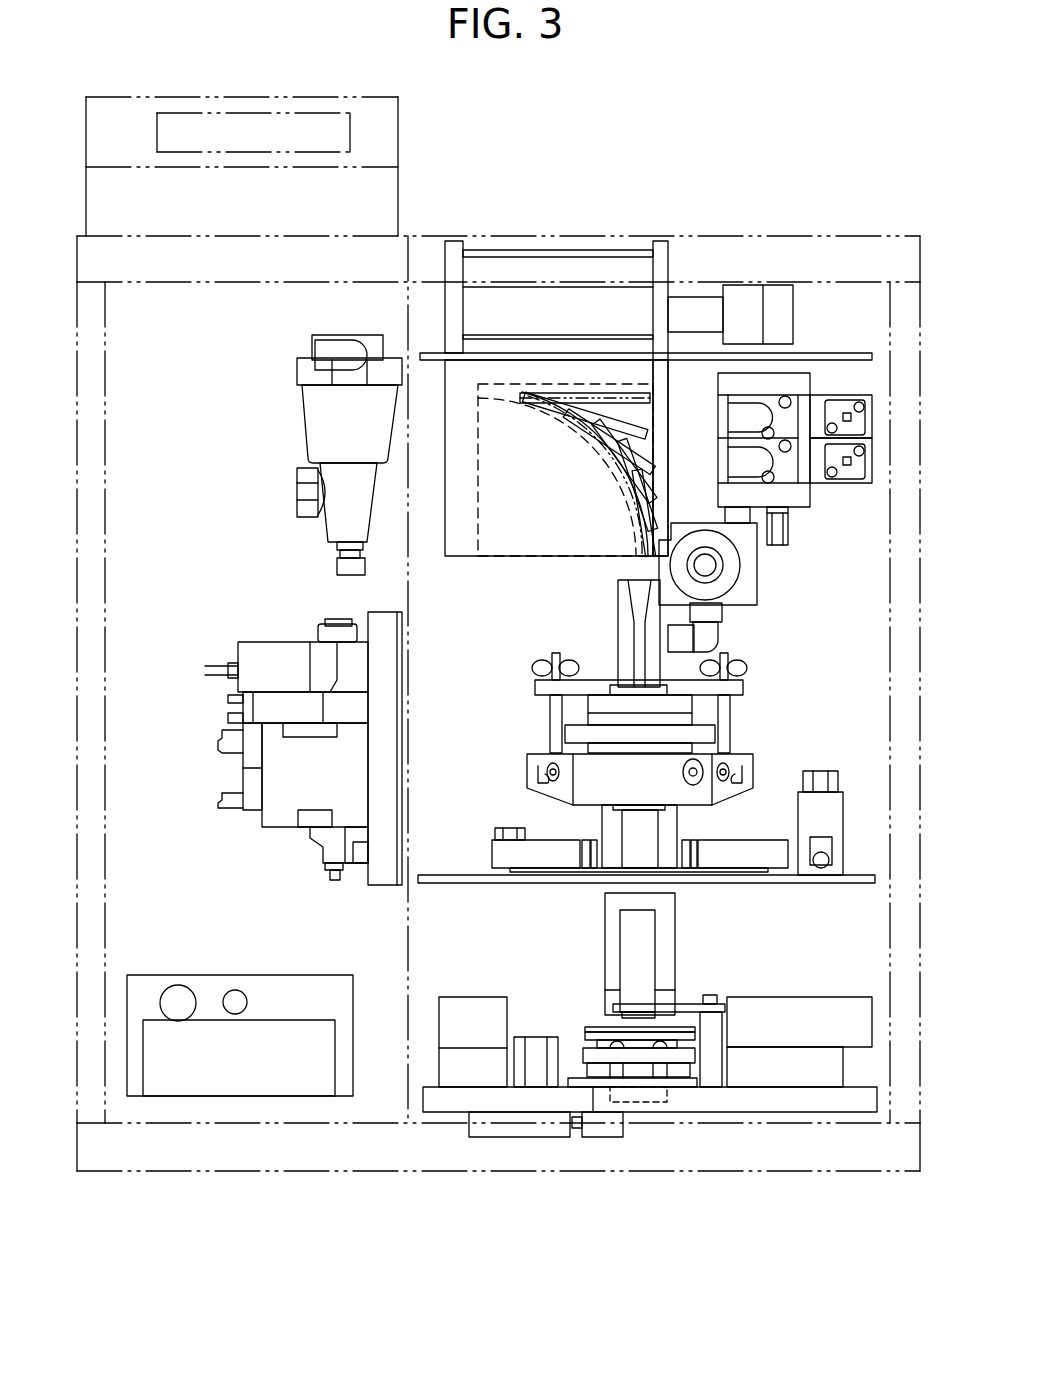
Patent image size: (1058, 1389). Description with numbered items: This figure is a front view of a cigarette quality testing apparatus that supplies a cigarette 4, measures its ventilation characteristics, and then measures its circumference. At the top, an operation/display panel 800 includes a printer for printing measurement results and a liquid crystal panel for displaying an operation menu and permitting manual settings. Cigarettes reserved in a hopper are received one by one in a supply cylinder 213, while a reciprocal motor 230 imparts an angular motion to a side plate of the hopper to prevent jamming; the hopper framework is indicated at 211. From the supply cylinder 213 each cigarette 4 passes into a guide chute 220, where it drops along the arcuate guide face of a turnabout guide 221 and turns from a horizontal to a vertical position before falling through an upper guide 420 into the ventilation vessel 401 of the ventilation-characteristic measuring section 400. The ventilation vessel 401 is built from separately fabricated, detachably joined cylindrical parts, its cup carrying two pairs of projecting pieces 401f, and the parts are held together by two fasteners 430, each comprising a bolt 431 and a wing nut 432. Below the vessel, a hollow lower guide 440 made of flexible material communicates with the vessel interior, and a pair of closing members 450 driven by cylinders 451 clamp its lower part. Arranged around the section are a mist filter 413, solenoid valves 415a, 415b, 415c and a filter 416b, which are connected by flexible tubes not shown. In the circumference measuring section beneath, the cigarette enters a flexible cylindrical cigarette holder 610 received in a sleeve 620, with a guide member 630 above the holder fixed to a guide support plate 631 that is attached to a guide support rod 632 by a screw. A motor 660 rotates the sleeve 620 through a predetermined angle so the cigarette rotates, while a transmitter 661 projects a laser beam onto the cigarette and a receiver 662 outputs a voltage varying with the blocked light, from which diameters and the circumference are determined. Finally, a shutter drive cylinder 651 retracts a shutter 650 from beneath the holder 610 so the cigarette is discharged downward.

The operation/display panel 800 is at (388, 127).
The supply cylinder 213 is at (523, 298).
The cigarette 4 is at (603, 398).
The support post 211 is at (670, 257).
The reciprocal motor 230 is at (747, 297).
The solenoid valve 415a is at (792, 420).
The solenoid valve 415b is at (792, 475).
The solenoid valve 415c is at (262, 657).
The mist filter 413 is at (316, 433).
The guide chute 220 is at (463, 543).
The turnabout guide 221 is at (514, 543).
The filter 416b is at (745, 590).
The upper guide 420 is at (617, 653).
The wing nut 432 is at (743, 662).
The fastener 430 is at (704, 681).
The bolt 431 is at (732, 712).
The ventilation vessel 401 is at (588, 708).
The ventilation-characteristic measuring section 400 is at (683, 692).
The projecting pieces 401f is at (755, 765).
The closing members 450 is at (592, 840).
The cylinders 451 is at (497, 853).
The lower guide 440 is at (635, 857).
The motor 660 is at (665, 912).
The guide member 630 is at (633, 968).
The guide support plate 631 is at (682, 1002).
The guide support rod 632 is at (712, 1035).
The transmitter 661 is at (835, 1007).
The receiver 662 is at (470, 1008).
The sleeve 620 is at (592, 1043).
The shutter drive cylinder 651 is at (533, 1130).
The shutter 650 is at (603, 1130).
The cigarette holder 610 is at (667, 1098).